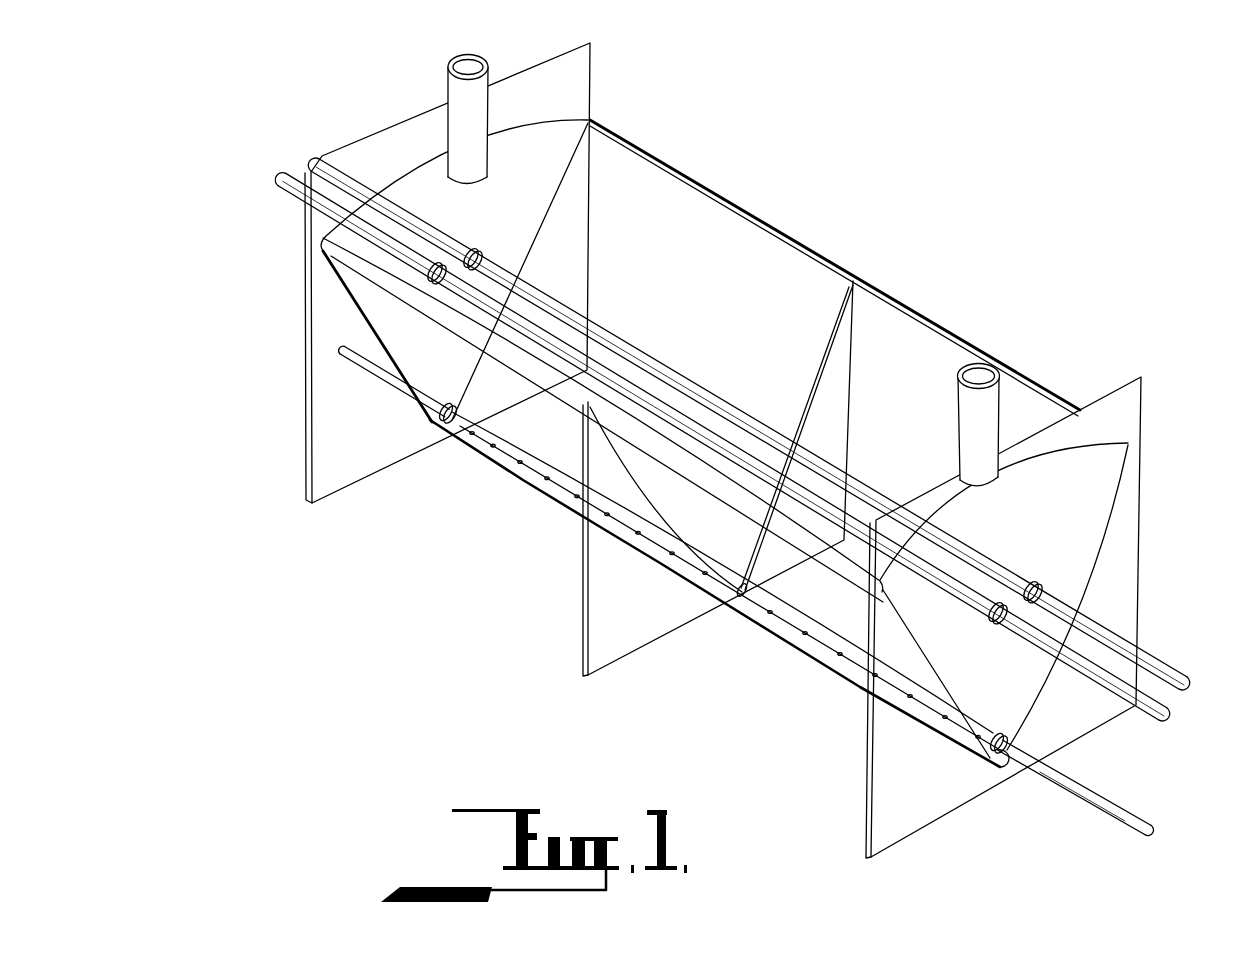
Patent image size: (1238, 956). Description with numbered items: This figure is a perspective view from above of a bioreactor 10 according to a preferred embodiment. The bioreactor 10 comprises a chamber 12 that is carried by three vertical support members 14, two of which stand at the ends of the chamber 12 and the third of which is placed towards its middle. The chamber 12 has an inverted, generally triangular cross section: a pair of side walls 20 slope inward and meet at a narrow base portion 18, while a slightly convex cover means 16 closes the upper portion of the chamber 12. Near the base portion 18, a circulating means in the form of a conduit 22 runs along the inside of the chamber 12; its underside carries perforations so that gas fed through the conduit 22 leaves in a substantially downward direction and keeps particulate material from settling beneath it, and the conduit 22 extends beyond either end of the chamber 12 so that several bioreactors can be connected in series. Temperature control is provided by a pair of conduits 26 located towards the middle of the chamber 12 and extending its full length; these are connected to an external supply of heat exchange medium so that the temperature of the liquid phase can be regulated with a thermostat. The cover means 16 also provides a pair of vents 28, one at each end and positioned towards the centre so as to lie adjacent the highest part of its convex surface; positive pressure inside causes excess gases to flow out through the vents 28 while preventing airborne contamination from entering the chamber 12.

The bioreactor 10 is at (842, 226).
The chamber 12 is at (663, 163).
The vertical support member 14 is at (305, 418).
The cover means 16 is at (690, 243).
The base portion 18 is at (534, 482).
The side wall 20 is at (800, 580).
The conduit 22 is at (1070, 792).
The conduits 26 is at (1147, 697).
The vent 28 is at (450, 80).